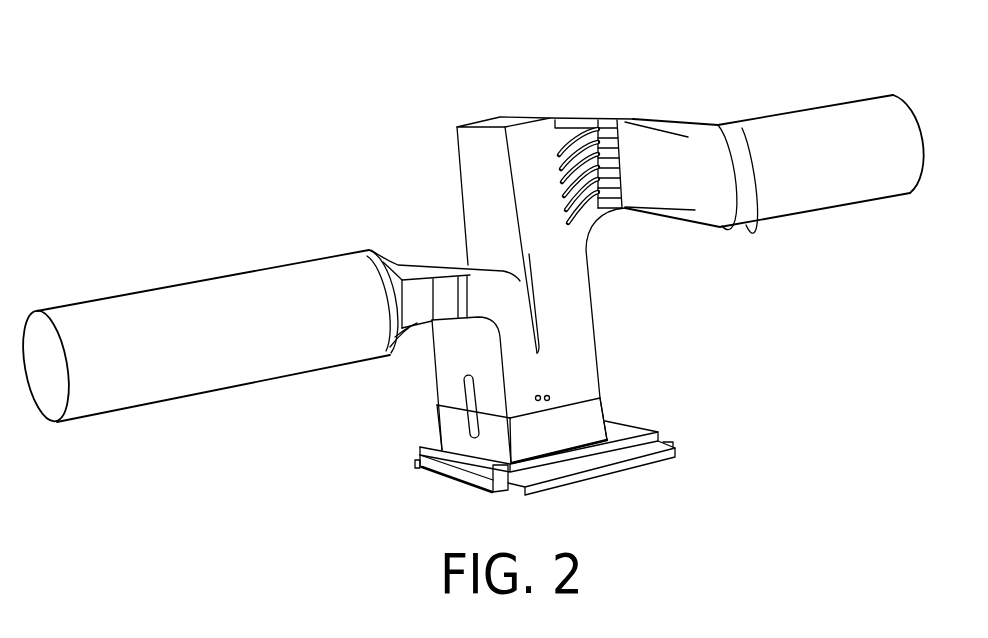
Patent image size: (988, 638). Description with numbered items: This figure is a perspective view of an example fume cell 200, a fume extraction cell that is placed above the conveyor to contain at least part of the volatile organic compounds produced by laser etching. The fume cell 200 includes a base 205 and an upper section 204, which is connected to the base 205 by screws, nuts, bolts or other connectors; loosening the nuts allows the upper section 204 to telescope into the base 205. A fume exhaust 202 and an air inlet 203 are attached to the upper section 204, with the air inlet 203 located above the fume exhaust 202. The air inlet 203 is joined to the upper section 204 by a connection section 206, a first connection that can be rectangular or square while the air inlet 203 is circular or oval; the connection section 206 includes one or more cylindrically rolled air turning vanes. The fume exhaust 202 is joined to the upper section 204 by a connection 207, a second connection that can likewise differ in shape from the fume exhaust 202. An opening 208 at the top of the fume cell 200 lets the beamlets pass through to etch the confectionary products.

The fume cell 200 is at (122, 48).
The fume exhaust 202 is at (210, 277).
The air inlet 203 is at (763, 115).
The upper section 204 is at (466, 193).
The base 205 is at (427, 443).
The connection section 206 is at (600, 120).
The connection 207 is at (450, 265).
The opening 208 is at (490, 122).